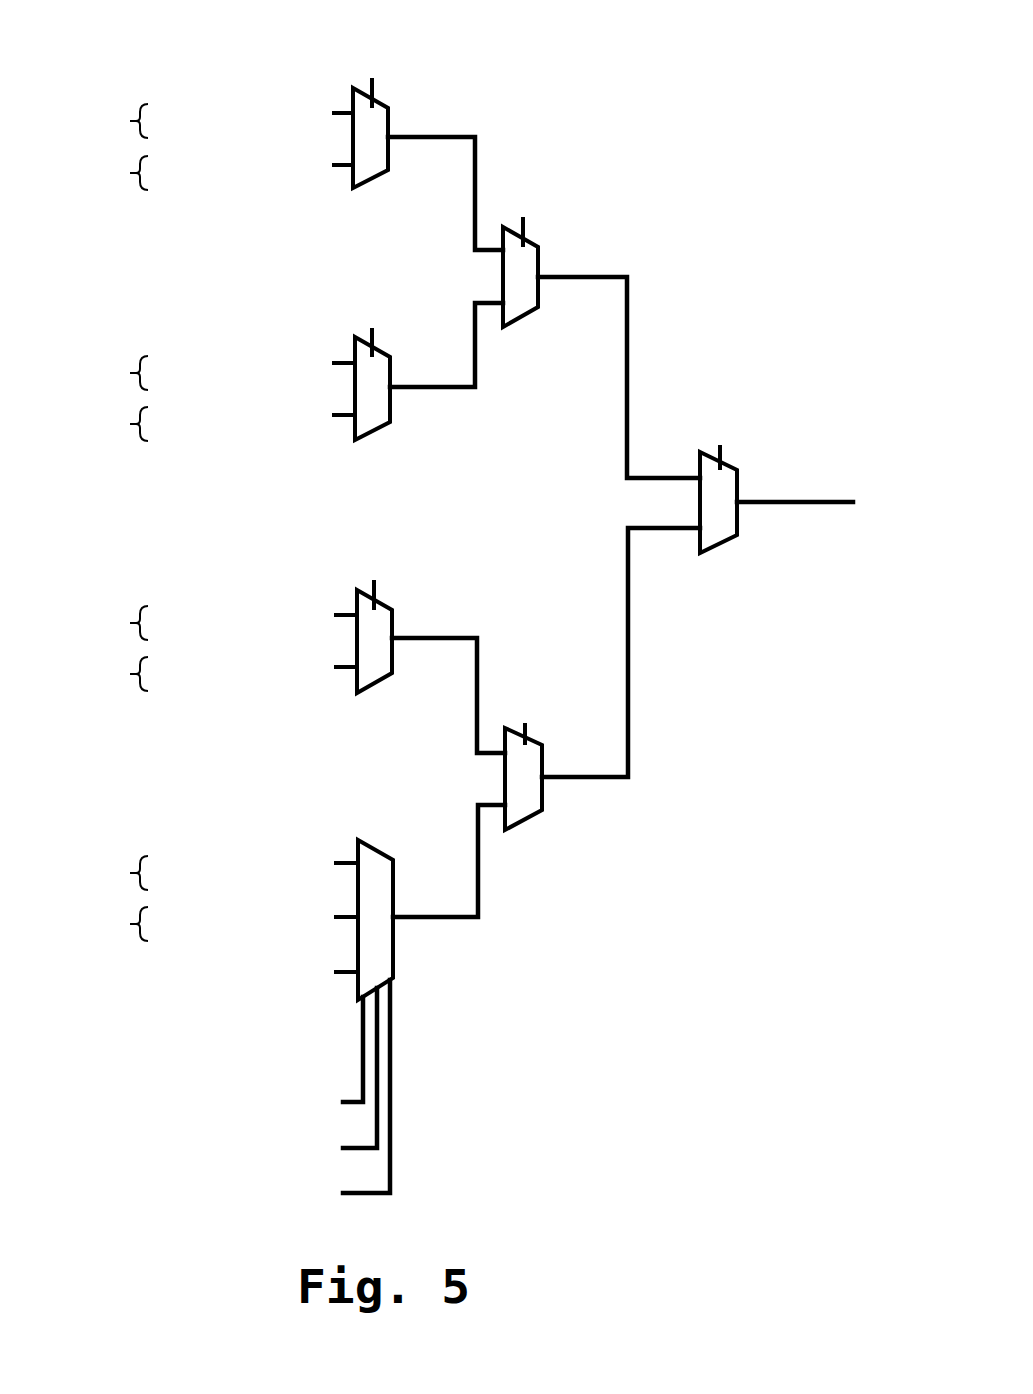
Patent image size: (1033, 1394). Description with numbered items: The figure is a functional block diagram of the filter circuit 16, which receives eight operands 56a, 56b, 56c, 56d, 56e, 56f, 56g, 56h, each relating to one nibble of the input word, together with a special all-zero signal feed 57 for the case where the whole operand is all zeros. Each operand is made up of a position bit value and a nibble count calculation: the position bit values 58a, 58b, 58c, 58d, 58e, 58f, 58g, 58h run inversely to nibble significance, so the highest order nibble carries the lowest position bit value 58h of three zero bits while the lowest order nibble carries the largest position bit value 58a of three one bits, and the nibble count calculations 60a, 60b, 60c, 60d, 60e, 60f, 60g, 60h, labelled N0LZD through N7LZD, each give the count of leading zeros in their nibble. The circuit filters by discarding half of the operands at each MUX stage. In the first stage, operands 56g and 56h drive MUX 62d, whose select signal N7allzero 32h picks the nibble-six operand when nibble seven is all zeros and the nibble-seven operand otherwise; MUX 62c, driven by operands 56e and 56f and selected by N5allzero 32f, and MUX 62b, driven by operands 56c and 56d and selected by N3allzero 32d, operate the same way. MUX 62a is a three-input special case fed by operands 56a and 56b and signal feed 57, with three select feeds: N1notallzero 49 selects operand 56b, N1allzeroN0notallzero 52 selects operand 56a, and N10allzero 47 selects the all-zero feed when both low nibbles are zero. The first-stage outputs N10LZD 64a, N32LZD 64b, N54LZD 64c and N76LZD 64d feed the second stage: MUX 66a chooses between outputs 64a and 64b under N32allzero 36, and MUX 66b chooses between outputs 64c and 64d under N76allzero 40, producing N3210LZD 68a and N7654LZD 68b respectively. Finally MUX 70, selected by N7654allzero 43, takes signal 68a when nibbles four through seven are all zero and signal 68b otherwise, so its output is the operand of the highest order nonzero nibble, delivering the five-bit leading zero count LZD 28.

The filter circuit 16 is at (705, 231).
The LZD 4:0 28 is at (822, 548).
The N3allzero signal 32d is at (398, 552).
The N5allzero signal 32f is at (398, 298).
The N7allzero signal 32h is at (398, 50).
The N32allzero signal 36 is at (551, 692).
The N76allzero signal 40 is at (548, 192).
The N7654allzero signal 43 is at (746, 418).
The N10allzero signal 47 is at (214, 1212).
The N1notallzero signal 49 is at (192, 1092).
The N1allzeroN0notallzero signal 52 is at (118, 1138).
The operand 56a is at (221, 932).
The operand 56b is at (221, 851).
The operand 56c is at (221, 683).
The operand 56d is at (221, 602).
The operand 56e is at (220, 433).
The operand 56f is at (220, 351).
The operand 56g is at (219, 182).
The operand 56h is at (219, 101).
The signal feed "00000" 57 is at (306, 986).
The position bit value 58a is at (174, 933).
The position bit value 58b is at (173, 850).
The position bit value 58c is at (174, 684).
The position bit value 58d is at (173, 602).
The position bit value 58e is at (172, 435).
The position bit value 58f is at (171, 350).
The position bit value 58g is at (172, 184).
The position bit value 58h is at (171, 102).
The nibble count calculation 60a is at (304, 933).
The nibble count calculation 60b is at (304, 850).
The nibble count calculation 60c is at (304, 684).
The nibble count calculation 60d is at (304, 602).
The nibble count calculation 60e is at (302, 435).
The nibble count calculation 60f is at (302, 350).
The nibble count calculation 60g is at (302, 184).
The nibble count calculation 60h is at (302, 102).
The multiplexer 62a is at (372, 857).
The multiplexer 62b is at (376, 683).
The multiplexer 62c is at (374, 430).
The multiplexer 62d is at (372, 178).
The N10LZD output 64a is at (437, 948).
The N32LZD output 64b is at (436, 608).
The N54LZD output 64c is at (445, 422).
The N76LZD output 64d is at (436, 106).
The multiplexer 66a is at (522, 822).
The multiplexer 66b is at (520, 318).
The N3210LZD output 68a is at (607, 806).
The N7654LZD output 68b is at (584, 246).
The multiplexer 70 is at (724, 543).